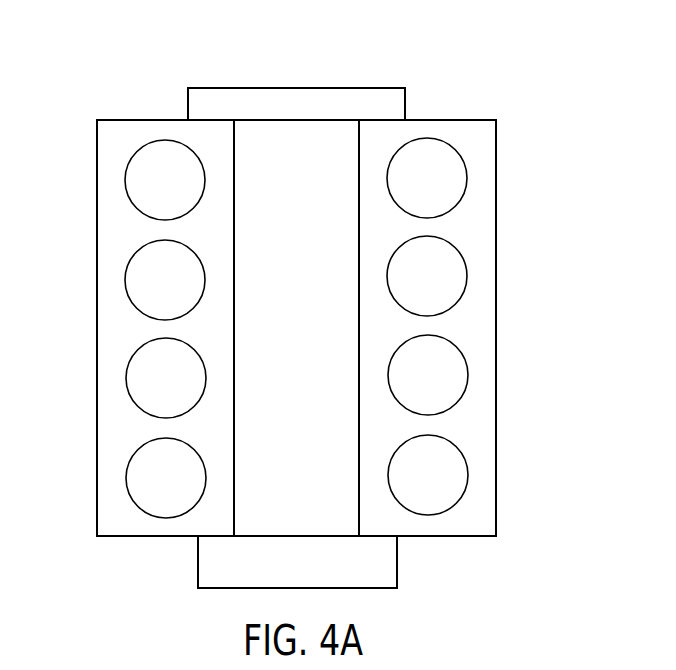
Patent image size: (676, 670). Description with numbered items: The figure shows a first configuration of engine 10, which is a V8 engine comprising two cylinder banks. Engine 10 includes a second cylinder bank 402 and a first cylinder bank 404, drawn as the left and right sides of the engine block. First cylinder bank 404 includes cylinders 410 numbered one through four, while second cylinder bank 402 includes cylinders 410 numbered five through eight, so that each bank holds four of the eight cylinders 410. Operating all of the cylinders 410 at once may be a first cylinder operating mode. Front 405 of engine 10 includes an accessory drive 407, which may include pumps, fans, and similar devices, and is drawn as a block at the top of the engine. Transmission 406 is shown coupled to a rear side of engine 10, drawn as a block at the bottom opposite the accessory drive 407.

The engine 10 is at (315, 40).
The second cylinder bank 402 is at (148, 40).
The first cylinder bank 404 is at (452, 80).
The front 405 is at (282, 70).
The transmission 406 is at (297, 562).
The accessory drive 407 is at (296, 104).
The cylinders 410 is at (125, 185).